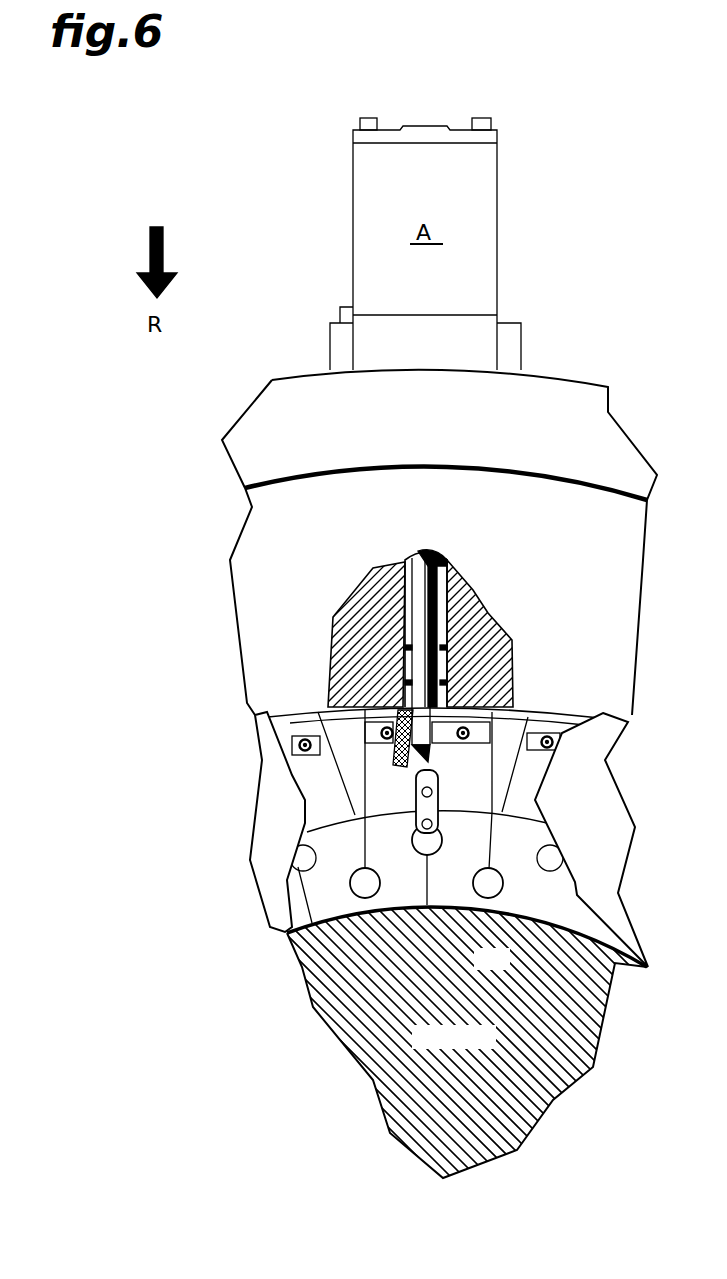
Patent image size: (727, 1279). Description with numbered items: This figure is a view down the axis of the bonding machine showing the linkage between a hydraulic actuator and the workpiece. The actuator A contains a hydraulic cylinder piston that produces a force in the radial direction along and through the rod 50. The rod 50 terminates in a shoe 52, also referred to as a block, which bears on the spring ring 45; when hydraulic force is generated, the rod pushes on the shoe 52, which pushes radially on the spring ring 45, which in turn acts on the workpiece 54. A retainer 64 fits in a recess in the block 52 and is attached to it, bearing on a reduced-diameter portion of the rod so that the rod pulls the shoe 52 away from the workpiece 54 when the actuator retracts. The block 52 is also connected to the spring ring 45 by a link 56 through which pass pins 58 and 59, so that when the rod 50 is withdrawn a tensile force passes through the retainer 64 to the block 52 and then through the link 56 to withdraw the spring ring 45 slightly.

The rod 50 is at (418, 585).
The retainer 64 is at (450, 732).
The shoe 52 is at (308, 794).
The link 56 is at (440, 810).
The pin 58 is at (426, 855).
The pin 59 is at (440, 826).
The spring ring 45 is at (513, 908).
The workpiece 54 is at (470, 1090).